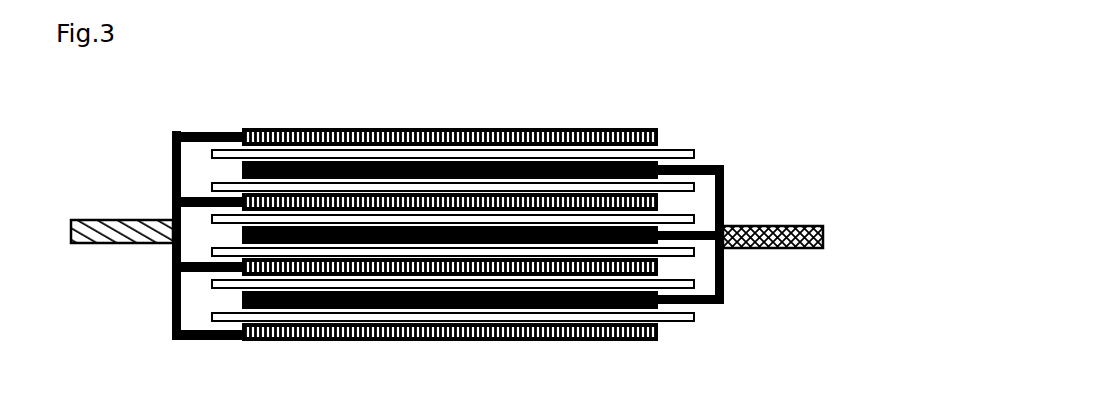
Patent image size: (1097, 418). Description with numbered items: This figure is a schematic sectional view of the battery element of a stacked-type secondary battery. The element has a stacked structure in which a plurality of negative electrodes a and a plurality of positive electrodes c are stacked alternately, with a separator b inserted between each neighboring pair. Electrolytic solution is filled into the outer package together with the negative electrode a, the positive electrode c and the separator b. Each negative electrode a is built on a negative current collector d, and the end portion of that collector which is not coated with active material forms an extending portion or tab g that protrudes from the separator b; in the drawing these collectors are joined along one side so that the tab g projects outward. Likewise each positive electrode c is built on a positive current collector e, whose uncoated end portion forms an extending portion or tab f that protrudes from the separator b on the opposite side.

The negative electrode a is at (371, 114).
The separator b is at (679, 134).
The positive electrode c is at (232, 293).
The negative current collector d is at (152, 278).
The positive current collector e is at (719, 264).
The extending portion (tab) of positive electrode f is at (764, 211).
The extending portion (tab) of negative electrode g is at (106, 204).